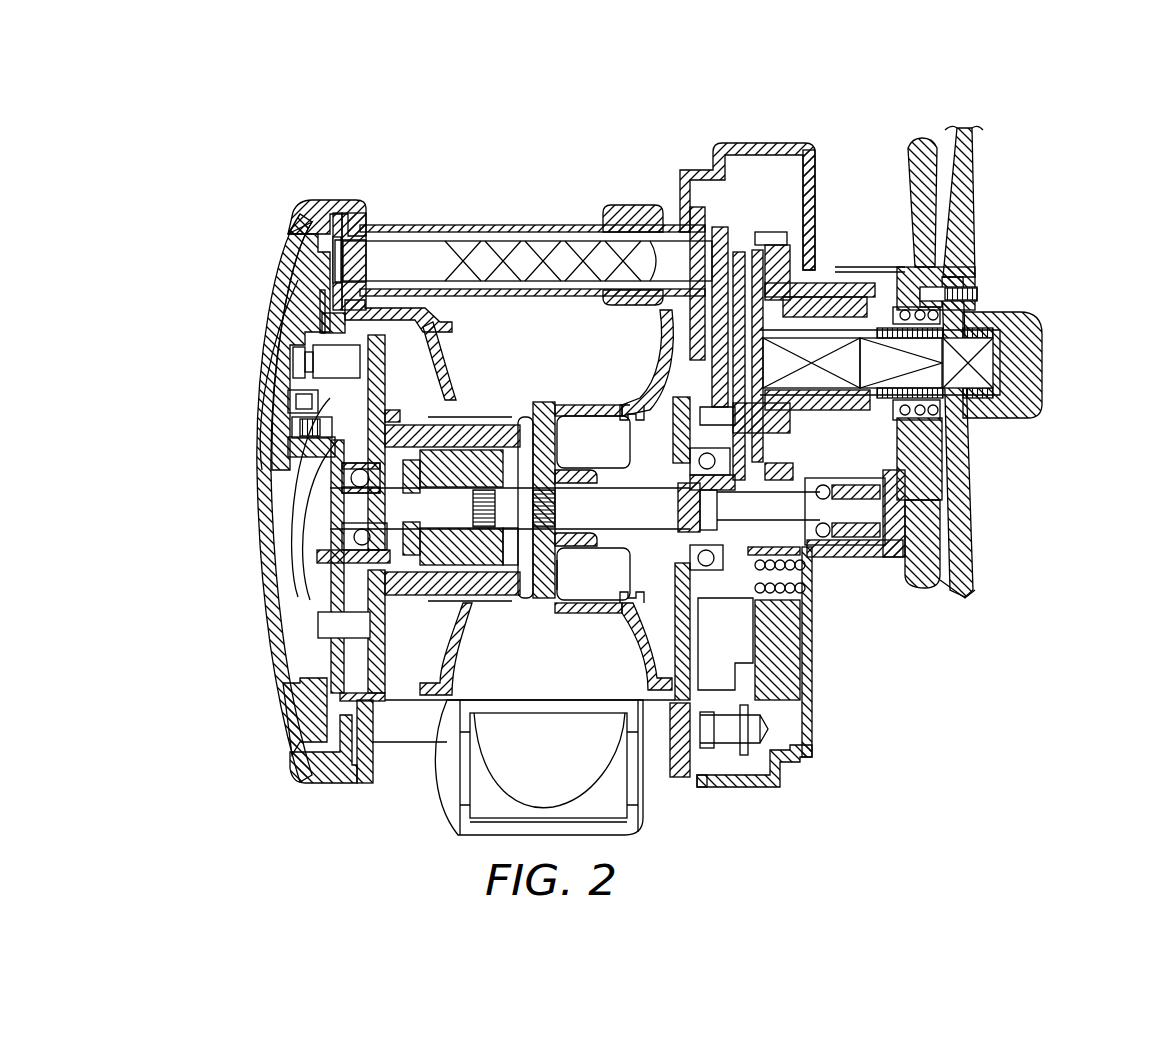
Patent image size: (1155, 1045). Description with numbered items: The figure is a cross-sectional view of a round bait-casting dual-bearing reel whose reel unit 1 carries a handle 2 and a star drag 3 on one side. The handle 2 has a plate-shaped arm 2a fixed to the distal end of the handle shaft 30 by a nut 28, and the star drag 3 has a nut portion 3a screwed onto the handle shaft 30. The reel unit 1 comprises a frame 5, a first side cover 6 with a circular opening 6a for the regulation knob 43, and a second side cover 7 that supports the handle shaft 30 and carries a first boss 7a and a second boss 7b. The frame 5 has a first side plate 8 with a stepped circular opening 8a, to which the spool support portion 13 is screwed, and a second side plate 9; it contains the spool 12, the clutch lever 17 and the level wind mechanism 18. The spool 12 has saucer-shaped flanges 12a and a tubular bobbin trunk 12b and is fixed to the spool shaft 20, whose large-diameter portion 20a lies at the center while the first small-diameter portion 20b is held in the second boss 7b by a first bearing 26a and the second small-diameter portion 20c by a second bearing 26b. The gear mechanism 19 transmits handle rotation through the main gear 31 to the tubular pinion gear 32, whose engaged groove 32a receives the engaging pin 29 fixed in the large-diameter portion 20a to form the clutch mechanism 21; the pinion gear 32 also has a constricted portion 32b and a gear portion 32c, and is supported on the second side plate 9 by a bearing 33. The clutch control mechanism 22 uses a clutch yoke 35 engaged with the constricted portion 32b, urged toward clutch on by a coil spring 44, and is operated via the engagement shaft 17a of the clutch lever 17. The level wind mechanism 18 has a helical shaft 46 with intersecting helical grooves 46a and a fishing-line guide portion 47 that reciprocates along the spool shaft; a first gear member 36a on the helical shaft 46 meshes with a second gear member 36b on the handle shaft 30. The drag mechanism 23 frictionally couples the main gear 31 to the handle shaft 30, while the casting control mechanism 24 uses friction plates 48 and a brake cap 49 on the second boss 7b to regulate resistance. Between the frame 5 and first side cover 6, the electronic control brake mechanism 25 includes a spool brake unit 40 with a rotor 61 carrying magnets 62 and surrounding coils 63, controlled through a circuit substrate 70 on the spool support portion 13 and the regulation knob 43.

The reel unit 1 is at (357, 193).
The handle 2 is at (988, 197).
The arm 2a is at (967, 243).
The star drag 3 is at (918, 141).
The nut portion 3a is at (962, 425).
The frame 5 is at (322, 197).
The first side cover 6 is at (278, 250).
The circular opening 6a is at (275, 288).
The second side cover 7 is at (806, 147).
The first boss 7a is at (816, 276).
The second boss 7b is at (960, 455).
The first side plate 8 is at (352, 748).
The stepped circular opening 8a is at (378, 310).
The second side plate 9 is at (680, 725).
The spool 12 is at (557, 397).
The flanges 12a is at (450, 370).
The bobbin trunk 12b is at (563, 405).
The spool support portion 13 is at (302, 440).
The clutch lever 17 is at (483, 782).
The engagement shaft 17a is at (730, 738).
The level wind mechanism 18 is at (482, 222).
The gear mechanism 19 is at (784, 221).
The spool shaft 20 is at (455, 482).
The large-diameter portion 20a is at (581, 497).
The first small-diameter portion 20b is at (907, 553).
The second small-diameter portion 20c is at (298, 597).
The clutch mechanism 21 is at (666, 546).
The clutch control mechanism 22 is at (773, 730).
The drag mechanism 23 is at (794, 240).
The casting control mechanism 24 is at (895, 567).
The electronic control brake mechanism 25 is at (413, 702).
The first bearing 26a is at (860, 558).
The second bearing 26b is at (345, 478).
The nut 28 is at (1035, 345).
The engaging pin 29 is at (672, 497).
The handle shaft 30 is at (824, 327).
The main gear 31 is at (758, 248).
The pinion gear 32 is at (812, 604).
The engaged groove 32a is at (641, 612).
The constricted portion 32b is at (806, 616).
The gear portion 32c is at (825, 600).
The bearing 33 is at (792, 762).
The clutch yoke 35 is at (730, 617).
The first gear member 36a is at (722, 240).
The second gear member 36b is at (677, 400).
The spool brake unit 40 is at (490, 402).
The regulation knob 43 is at (292, 332).
The coil spring 44 is at (785, 640).
The helical shaft 46 is at (527, 240).
The intersecting helical grooves 46a is at (543, 240).
The fishing-line guide portion 47 is at (633, 212).
The friction plates 48 is at (930, 530).
The brake cap 49 is at (922, 590).
The rotor 61 is at (518, 552).
The magnets 62 is at (418, 608).
The coils 63 is at (508, 566).
The circuit substrate 70 is at (300, 398).